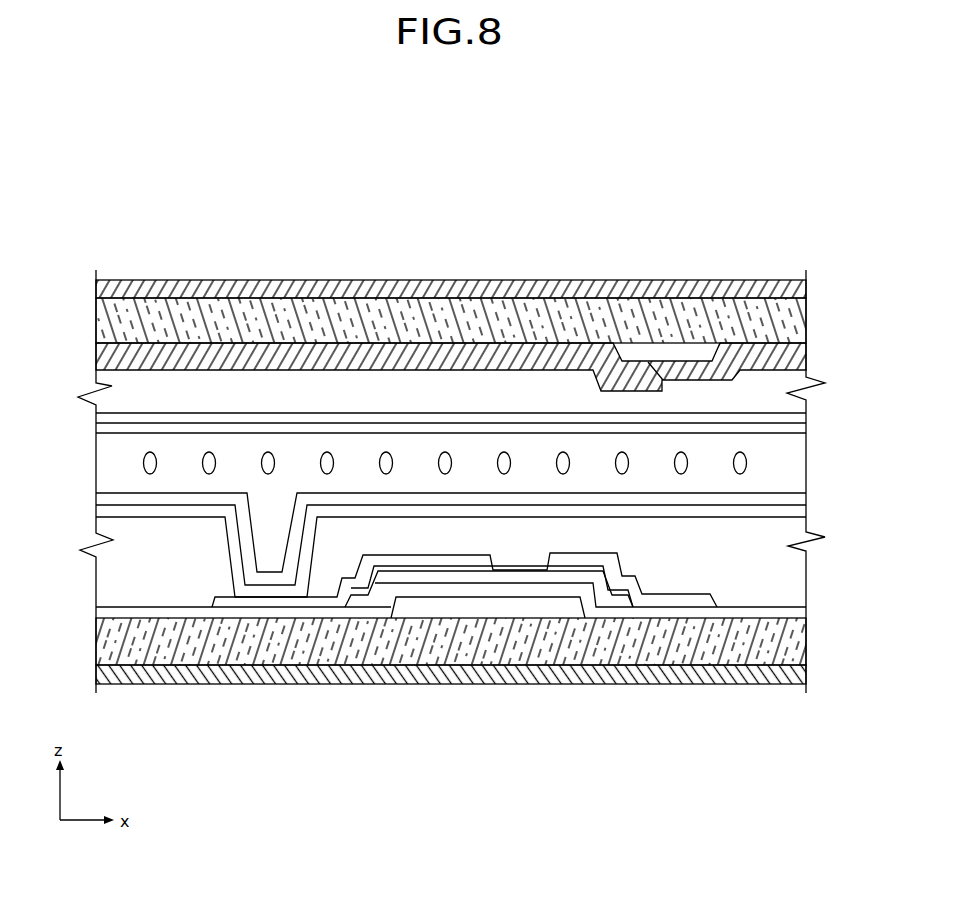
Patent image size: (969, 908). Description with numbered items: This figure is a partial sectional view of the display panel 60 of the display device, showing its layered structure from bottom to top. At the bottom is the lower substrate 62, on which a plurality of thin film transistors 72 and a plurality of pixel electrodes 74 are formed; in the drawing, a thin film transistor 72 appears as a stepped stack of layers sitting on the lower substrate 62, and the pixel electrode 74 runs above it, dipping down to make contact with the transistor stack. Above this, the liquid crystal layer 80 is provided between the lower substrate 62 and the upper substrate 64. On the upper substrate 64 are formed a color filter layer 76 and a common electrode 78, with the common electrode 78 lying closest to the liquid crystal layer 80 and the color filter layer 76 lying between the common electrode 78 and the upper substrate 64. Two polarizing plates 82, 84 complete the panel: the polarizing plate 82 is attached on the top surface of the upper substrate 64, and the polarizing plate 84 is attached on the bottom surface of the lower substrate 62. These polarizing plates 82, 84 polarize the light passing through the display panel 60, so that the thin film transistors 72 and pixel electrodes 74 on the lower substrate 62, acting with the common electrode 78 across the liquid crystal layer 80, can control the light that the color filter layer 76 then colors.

The display panel 60 is at (731, 243).
The lower substrate 62 is at (804, 633).
The upper substrate 64 is at (804, 318).
The thin film transistor 72 is at (641, 560).
The pixel electrode 74 is at (97, 509).
The color filter layer 76 is at (98, 356).
The common electrode 78 is at (804, 416).
The liquid crystal layer 80 is at (804, 464).
The polarizing plate 82 is at (804, 289).
The polarizing plate 84 is at (804, 672).